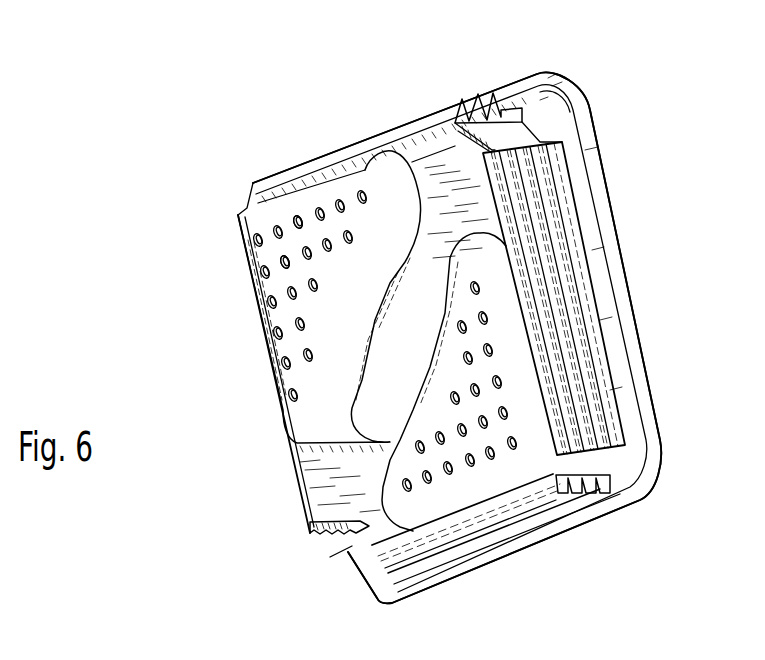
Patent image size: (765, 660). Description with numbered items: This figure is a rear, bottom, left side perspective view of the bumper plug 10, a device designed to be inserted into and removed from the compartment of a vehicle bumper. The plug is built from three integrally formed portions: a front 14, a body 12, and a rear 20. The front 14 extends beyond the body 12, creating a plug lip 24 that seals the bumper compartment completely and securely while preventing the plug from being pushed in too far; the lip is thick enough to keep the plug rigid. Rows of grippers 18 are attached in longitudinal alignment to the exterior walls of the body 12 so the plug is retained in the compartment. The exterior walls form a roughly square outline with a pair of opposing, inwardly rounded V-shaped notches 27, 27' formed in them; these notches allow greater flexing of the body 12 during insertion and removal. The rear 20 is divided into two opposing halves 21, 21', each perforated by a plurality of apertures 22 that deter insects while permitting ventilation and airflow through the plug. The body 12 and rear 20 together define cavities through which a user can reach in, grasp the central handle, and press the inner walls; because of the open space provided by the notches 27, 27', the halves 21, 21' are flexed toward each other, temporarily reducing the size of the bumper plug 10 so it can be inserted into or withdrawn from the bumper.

The bumper plug 10 is at (42, 194).
The body 12 is at (522, 120).
The front 14 is at (614, 210).
The grippers 18 is at (563, 335).
The rear 20 is at (466, 488).
The half 21 is at (450, 382).
The half 21' is at (329, 301).
The apertures 22 is at (280, 262).
The plug lip 24 is at (542, 108).
The V-shaped notch 27 is at (326, 553).
The V-shaped notch 27' is at (488, 76).